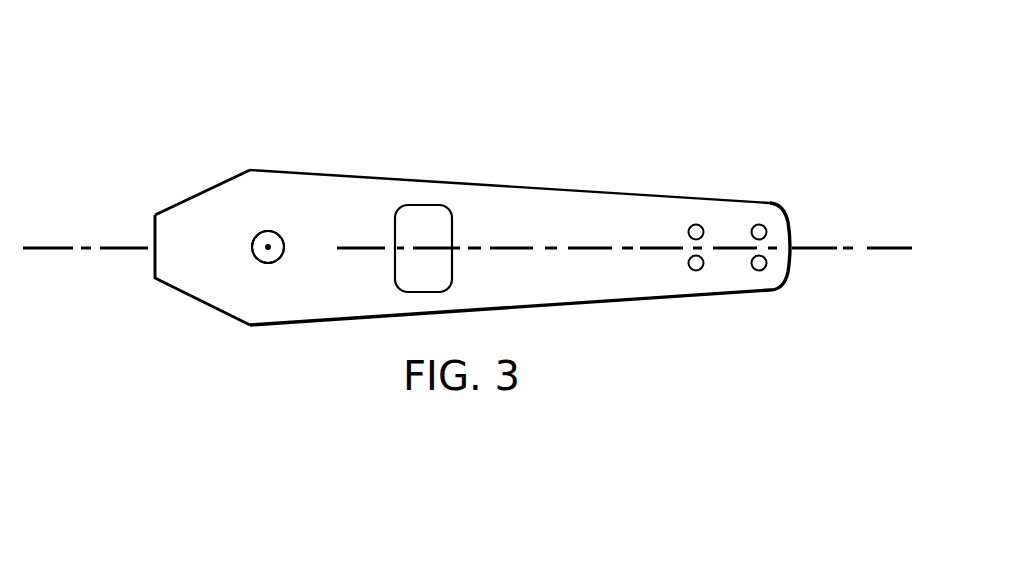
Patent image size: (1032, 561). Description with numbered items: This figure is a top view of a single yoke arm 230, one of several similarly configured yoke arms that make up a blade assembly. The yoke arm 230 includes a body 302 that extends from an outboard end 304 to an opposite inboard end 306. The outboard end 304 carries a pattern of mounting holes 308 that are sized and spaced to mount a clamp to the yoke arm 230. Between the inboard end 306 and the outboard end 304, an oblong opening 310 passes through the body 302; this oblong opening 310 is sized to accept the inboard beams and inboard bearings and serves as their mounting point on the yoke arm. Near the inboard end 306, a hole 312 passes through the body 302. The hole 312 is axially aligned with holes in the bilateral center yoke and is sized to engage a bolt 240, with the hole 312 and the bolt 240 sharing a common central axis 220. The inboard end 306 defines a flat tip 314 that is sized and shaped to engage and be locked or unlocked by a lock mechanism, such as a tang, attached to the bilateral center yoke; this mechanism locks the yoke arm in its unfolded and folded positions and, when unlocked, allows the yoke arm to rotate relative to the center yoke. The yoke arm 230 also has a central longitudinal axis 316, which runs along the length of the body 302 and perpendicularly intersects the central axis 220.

The yoke arm 230 is at (657, 83).
The body 302 is at (493, 183).
The outboard end 304 is at (789, 270).
The inboard end 306 is at (183, 202).
The mounting holes 308 is at (700, 270).
The oblong opening 310 is at (417, 292).
The hole 312 is at (284, 257).
The flat tip 314 is at (152, 262).
The central longitudinal axis 316 is at (888, 245).
The central axis 220 is at (268, 240).
The bolt 240 is at (252, 250).